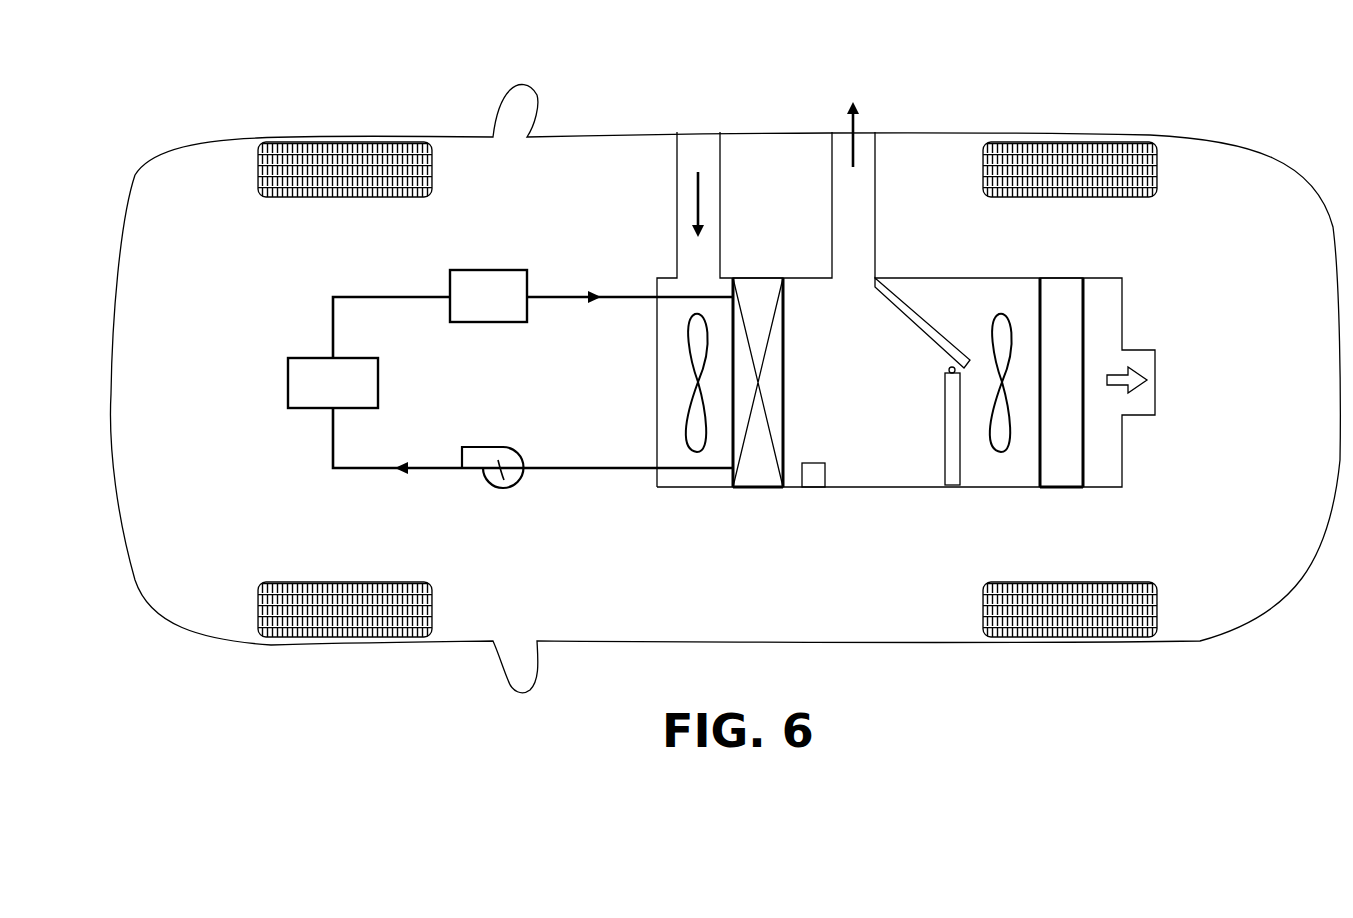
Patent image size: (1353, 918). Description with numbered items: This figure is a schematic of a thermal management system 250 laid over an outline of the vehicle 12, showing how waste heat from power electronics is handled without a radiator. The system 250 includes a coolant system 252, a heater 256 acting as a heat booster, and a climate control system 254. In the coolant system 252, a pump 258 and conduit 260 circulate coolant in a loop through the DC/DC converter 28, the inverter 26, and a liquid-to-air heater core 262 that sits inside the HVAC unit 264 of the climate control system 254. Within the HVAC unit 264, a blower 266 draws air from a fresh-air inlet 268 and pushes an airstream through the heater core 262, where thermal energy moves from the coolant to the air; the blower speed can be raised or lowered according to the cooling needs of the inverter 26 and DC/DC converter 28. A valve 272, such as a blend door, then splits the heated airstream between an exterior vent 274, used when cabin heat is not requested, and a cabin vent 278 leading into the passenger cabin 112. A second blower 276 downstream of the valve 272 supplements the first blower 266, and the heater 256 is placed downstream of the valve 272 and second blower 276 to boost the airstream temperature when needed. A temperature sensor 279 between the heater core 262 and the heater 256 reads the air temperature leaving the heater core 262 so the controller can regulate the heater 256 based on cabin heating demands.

The vehicle 12 is at (452, 137).
The passenger cabin 112 is at (1237, 200).
The inverter 26 is at (488, 270).
The DC/DC converter 28 is at (288, 383).
The thermal management system 250 is at (590, 158).
The coolant system 252 is at (465, 373).
The climate control system 254 is at (917, 350).
The heater 256 is at (1060, 487).
The pump 258 is at (504, 480).
The conduit 260 is at (398, 295).
The heater core 262 is at (783, 383).
The HVAC unit 264 is at (875, 487).
The blower 266 is at (693, 330).
The fresh-air inlet 268 is at (720, 165).
The valve 272 is at (917, 375).
The exterior vent 274 is at (875, 165).
The second blower 276 is at (1002, 440).
The cabin vent 278 is at (1155, 380).
The temperature sensor 279 is at (813, 477).